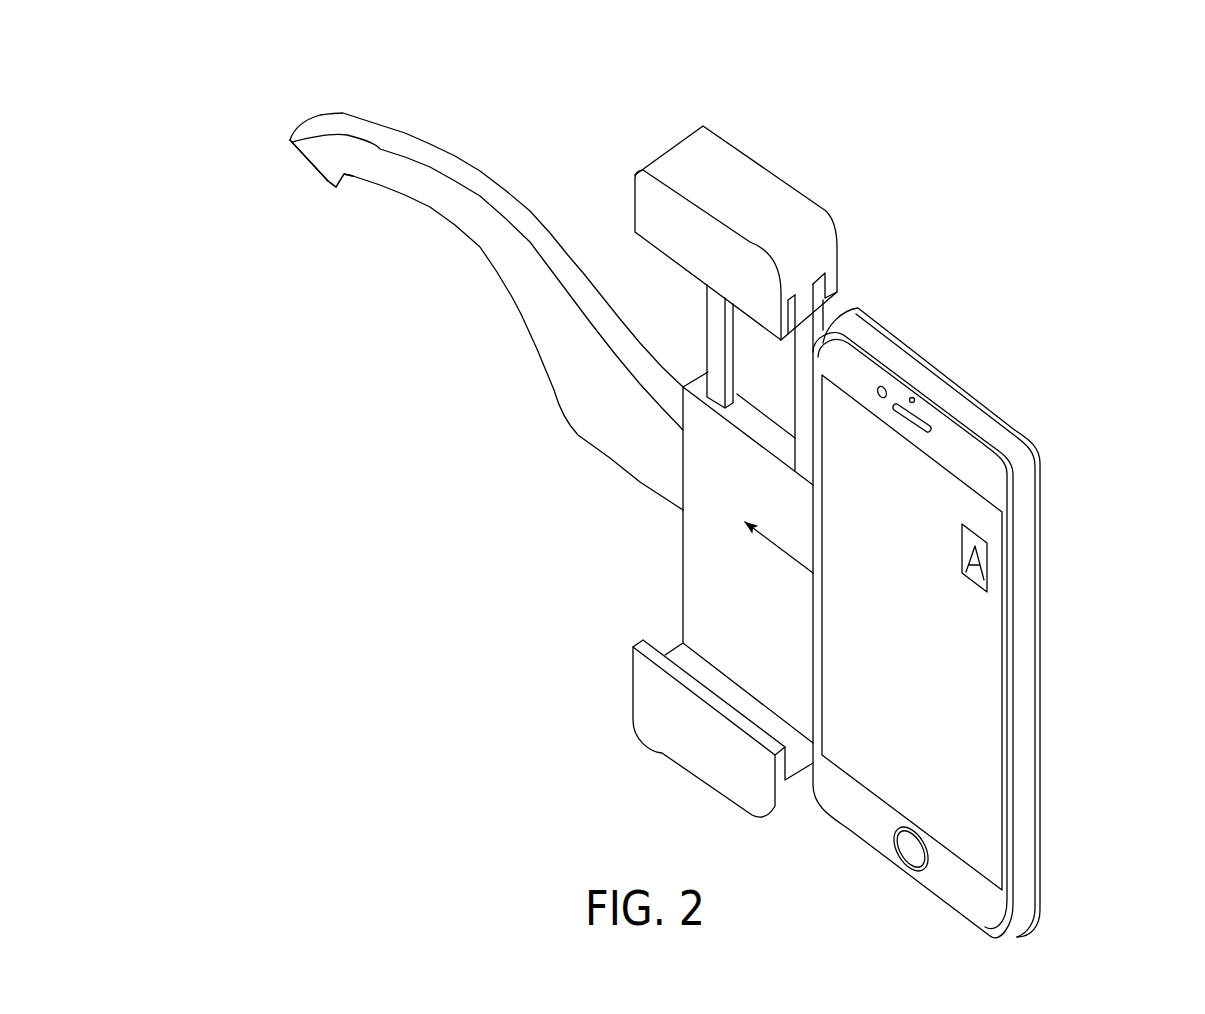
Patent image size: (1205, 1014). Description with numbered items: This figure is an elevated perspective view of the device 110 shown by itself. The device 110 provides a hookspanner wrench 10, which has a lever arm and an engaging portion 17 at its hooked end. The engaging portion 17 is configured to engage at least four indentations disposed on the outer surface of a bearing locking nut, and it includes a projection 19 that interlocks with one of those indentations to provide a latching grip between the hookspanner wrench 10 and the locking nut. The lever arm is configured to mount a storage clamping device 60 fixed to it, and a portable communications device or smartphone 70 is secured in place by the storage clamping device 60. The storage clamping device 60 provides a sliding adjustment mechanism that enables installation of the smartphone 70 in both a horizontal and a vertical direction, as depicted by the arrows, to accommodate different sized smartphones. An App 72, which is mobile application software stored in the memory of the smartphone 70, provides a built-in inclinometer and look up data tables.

The hookspanner wrench 10 is at (511, 465).
The engaging portion 17 is at (320, 155).
The projection 19 is at (333, 180).
The storage clamping device 60 is at (776, 160).
The smartphone 70 is at (951, 601).
The App 72 is at (962, 577).
The device 110 is at (694, 482).